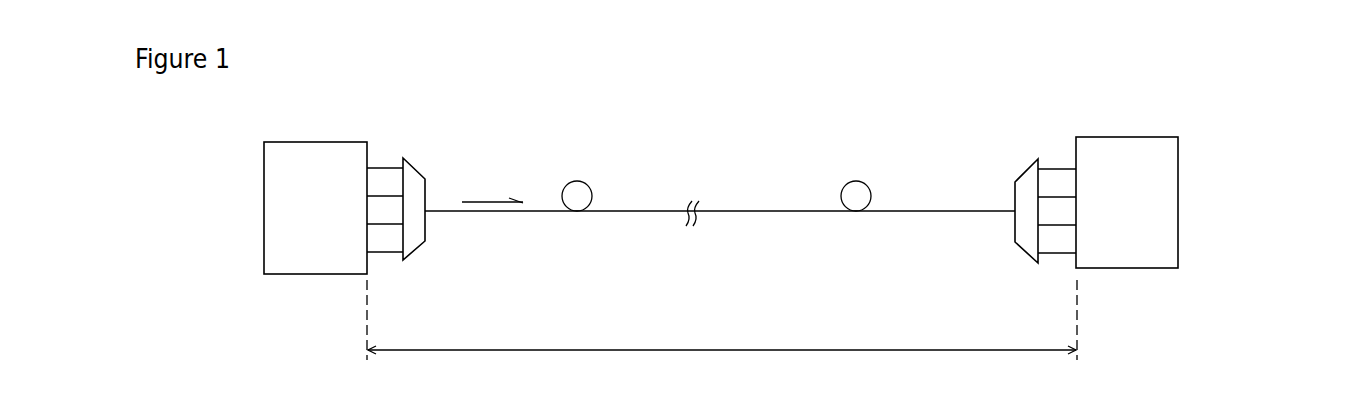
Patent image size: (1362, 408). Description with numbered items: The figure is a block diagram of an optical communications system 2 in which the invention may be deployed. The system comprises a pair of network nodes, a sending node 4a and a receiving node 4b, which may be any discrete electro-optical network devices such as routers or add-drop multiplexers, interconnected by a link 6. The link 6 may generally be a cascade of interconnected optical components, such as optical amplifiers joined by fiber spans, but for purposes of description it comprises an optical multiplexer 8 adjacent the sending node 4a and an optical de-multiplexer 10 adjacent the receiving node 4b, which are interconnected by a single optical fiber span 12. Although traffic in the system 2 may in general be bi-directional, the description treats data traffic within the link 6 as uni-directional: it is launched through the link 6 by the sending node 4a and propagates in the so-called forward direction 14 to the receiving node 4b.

The optical communications system 2 is at (1256, 110).
The sending node 4a is at (313, 141).
The receiving node 4b is at (1130, 137).
The link 6 is at (722, 320).
The optical multiplexer 8 is at (418, 173).
The optical de-multiplexer 10 is at (1022, 175).
The optical fiber span 12 is at (747, 211).
The forward direction 14 is at (486, 202).